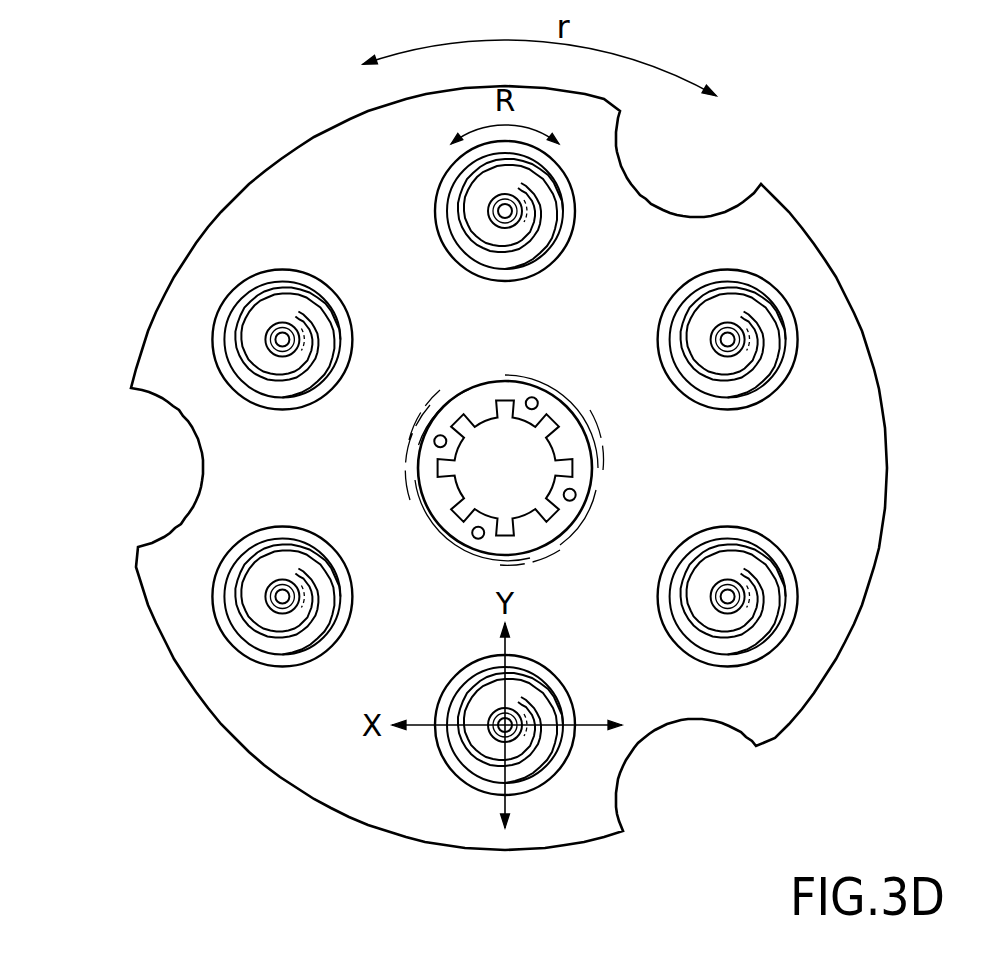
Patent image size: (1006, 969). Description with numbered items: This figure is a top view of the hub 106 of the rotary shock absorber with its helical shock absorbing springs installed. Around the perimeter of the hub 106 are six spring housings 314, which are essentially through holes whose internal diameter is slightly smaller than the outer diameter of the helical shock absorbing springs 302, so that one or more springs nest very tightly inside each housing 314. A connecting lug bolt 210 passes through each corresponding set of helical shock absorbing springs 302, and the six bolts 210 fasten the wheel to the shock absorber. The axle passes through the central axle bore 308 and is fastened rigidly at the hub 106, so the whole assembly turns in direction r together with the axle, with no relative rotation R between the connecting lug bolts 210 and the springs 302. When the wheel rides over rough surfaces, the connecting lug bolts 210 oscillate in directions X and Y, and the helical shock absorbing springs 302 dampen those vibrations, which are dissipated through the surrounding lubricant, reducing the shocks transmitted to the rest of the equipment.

The hub 106 is at (853, 448).
The connecting lug bolt 210 is at (747, 328).
The helical shock absorbing spring 302 is at (768, 330).
The axle bore 308 is at (528, 488).
The spring housing 314 is at (730, 377).